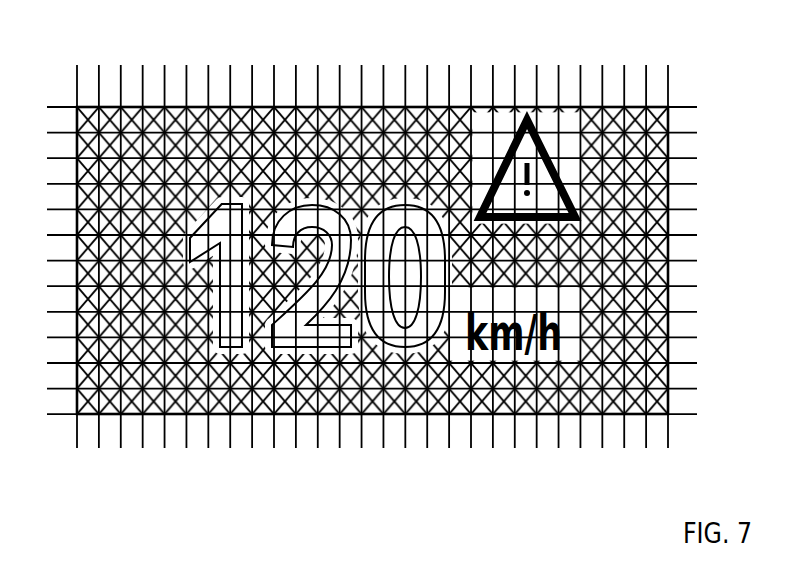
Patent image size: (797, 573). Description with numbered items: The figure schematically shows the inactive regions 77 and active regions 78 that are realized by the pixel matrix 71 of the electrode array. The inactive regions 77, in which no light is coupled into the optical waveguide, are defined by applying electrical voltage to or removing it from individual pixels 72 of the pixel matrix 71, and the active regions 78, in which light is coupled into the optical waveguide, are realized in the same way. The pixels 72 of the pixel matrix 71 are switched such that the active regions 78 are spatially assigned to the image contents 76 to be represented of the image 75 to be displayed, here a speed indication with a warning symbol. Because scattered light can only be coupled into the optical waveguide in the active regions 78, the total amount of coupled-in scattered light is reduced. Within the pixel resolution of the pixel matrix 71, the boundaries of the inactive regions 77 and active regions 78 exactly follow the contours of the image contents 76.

The pixel matrix 71 is at (682, 88).
The pixel 72 is at (662, 222).
The image 75 is at (130, 107).
The image contents 76 is at (222, 345).
The inactive region 77 is at (567, 407).
The active region 78 is at (372, 350).